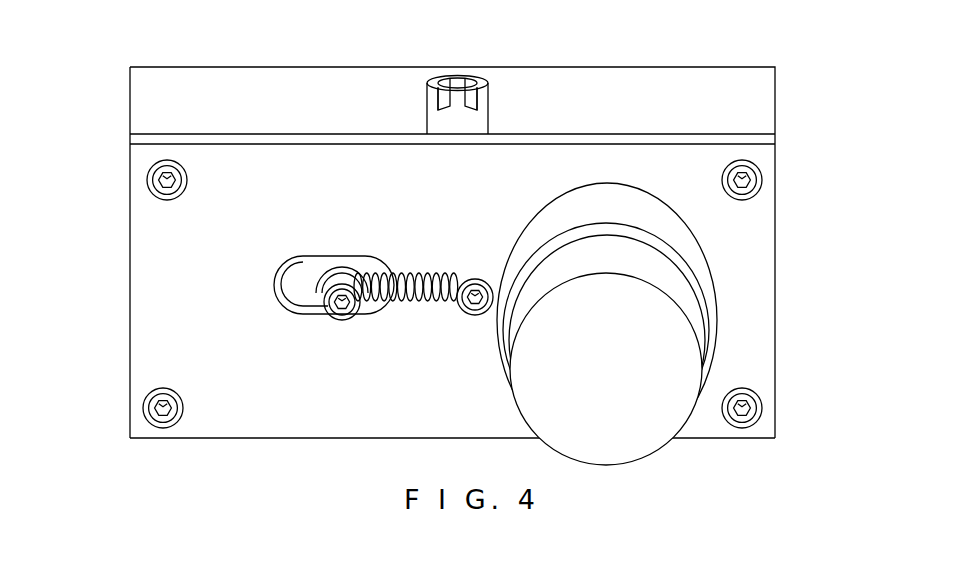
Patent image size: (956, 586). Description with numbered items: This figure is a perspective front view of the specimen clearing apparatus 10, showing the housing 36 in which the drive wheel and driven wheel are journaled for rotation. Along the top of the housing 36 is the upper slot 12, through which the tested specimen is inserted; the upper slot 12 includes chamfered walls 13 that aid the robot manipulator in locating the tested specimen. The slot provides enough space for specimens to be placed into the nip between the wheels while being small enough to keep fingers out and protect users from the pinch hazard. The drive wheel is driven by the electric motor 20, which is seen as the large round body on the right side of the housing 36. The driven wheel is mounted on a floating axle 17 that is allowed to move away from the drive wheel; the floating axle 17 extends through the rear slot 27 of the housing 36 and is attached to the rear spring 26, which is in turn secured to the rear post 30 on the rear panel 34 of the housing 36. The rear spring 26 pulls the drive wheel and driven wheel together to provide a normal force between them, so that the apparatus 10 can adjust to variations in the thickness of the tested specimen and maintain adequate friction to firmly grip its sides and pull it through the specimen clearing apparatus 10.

The specimen clearing apparatus 10 is at (790, 94).
The upper slot 12 is at (457, 67).
The chamfered walls 13 is at (485, 104).
The floating axle 17 is at (333, 314).
The electric motor 20 is at (652, 437).
The rear spring 26 is at (418, 303).
The rear slot 27 is at (268, 285).
The rear post 30 is at (482, 313).
The rear panel 34 is at (237, 428).
The housing 36 is at (125, 222).